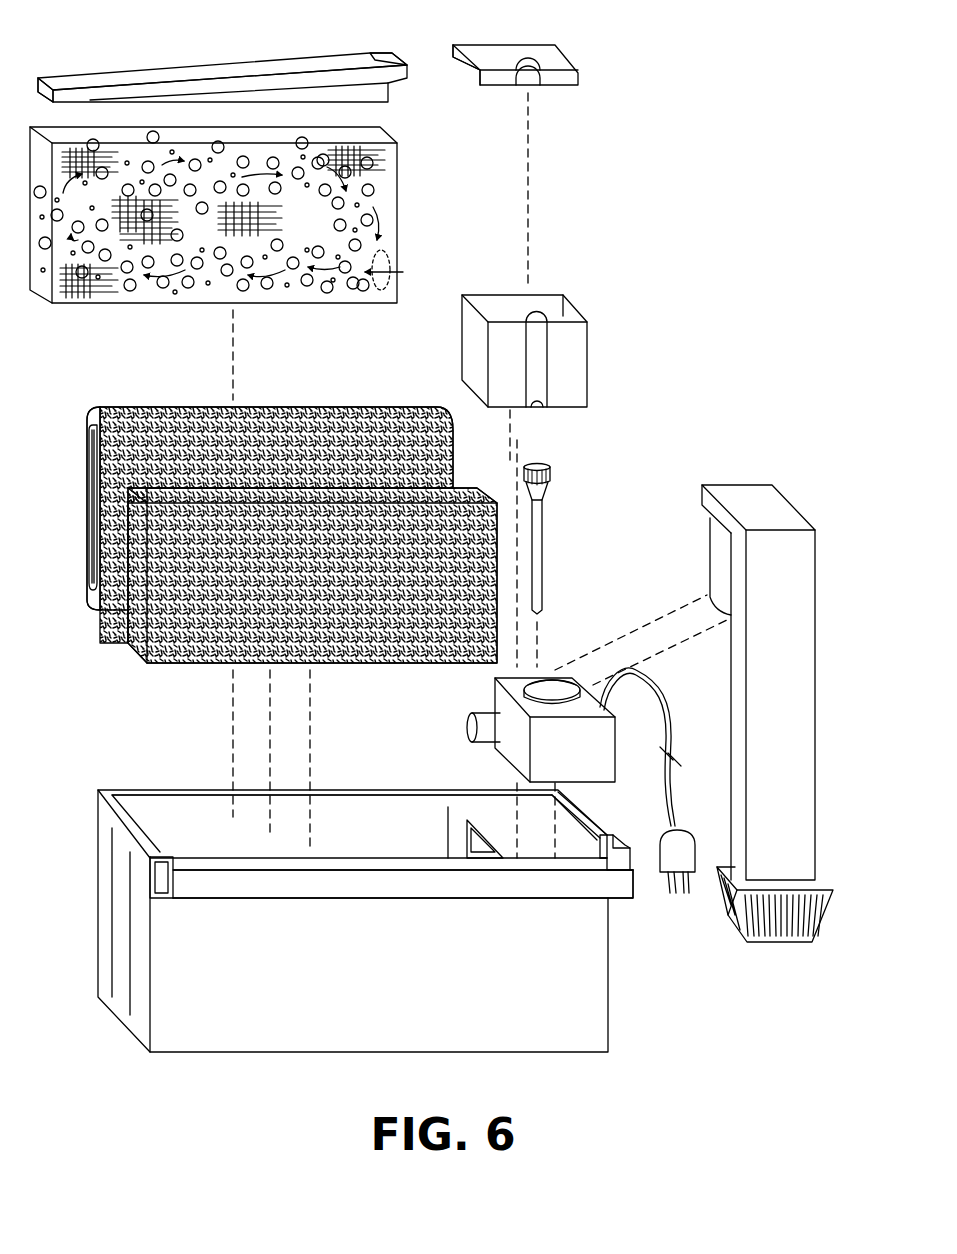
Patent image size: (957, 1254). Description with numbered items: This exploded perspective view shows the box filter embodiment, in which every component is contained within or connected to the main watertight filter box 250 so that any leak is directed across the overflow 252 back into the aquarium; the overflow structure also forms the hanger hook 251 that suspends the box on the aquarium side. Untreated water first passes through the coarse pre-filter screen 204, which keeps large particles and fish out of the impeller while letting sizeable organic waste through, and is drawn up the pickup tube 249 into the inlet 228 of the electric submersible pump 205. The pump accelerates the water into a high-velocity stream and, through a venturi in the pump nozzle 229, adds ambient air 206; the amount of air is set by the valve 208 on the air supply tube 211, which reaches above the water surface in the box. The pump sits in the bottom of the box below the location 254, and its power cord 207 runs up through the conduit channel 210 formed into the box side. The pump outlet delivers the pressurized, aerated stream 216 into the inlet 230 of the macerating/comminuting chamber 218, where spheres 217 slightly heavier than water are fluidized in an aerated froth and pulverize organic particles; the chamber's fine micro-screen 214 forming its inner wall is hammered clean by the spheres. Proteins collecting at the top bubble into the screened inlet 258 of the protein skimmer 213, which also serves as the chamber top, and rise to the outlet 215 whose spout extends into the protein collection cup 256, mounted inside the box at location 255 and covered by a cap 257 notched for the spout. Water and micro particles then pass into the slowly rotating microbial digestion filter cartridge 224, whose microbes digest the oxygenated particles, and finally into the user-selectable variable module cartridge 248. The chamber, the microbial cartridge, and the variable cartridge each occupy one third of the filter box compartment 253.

The coarse pre-filter screen 204 is at (770, 946).
The electric submersible pump 205 is at (615, 748).
The ambient air 206 is at (178, 294).
The power cord 207 is at (680, 712).
The valve 208 is at (553, 470).
The conduit channel 210 is at (613, 835).
The air supply tube 211 is at (543, 566).
The protein skimmer 213 is at (244, 60).
The water tank housing 214 is at (400, 156).
The skimmer outlet spout 215 is at (396, 56).
The aerated stream 216 is at (404, 272).
The comminuting spheres 217 is at (125, 289).
The macerating/comminuting chamber 218 is at (334, 305).
The microbial digestion filter cartridge 224 is at (144, 406).
The pump inlet 228 is at (552, 682).
The pump nozzle 229 is at (470, 718).
The chamber inlet 230 is at (388, 252).
The variable module cartridge 248 is at (128, 648).
The pickup tube 249 is at (753, 484).
The main watertight filter box 250 is at (283, 1052).
The hanger hook 251 is at (150, 867).
The overflow 252 is at (200, 905).
The filter box compartment 253 is at (192, 812).
The pump location 254 is at (567, 843).
The cup mounting location 255 is at (492, 812).
The protein collection cup 256 is at (590, 350).
The cap 257 is at (565, 87).
The skimmer inlet 258 is at (66, 95).